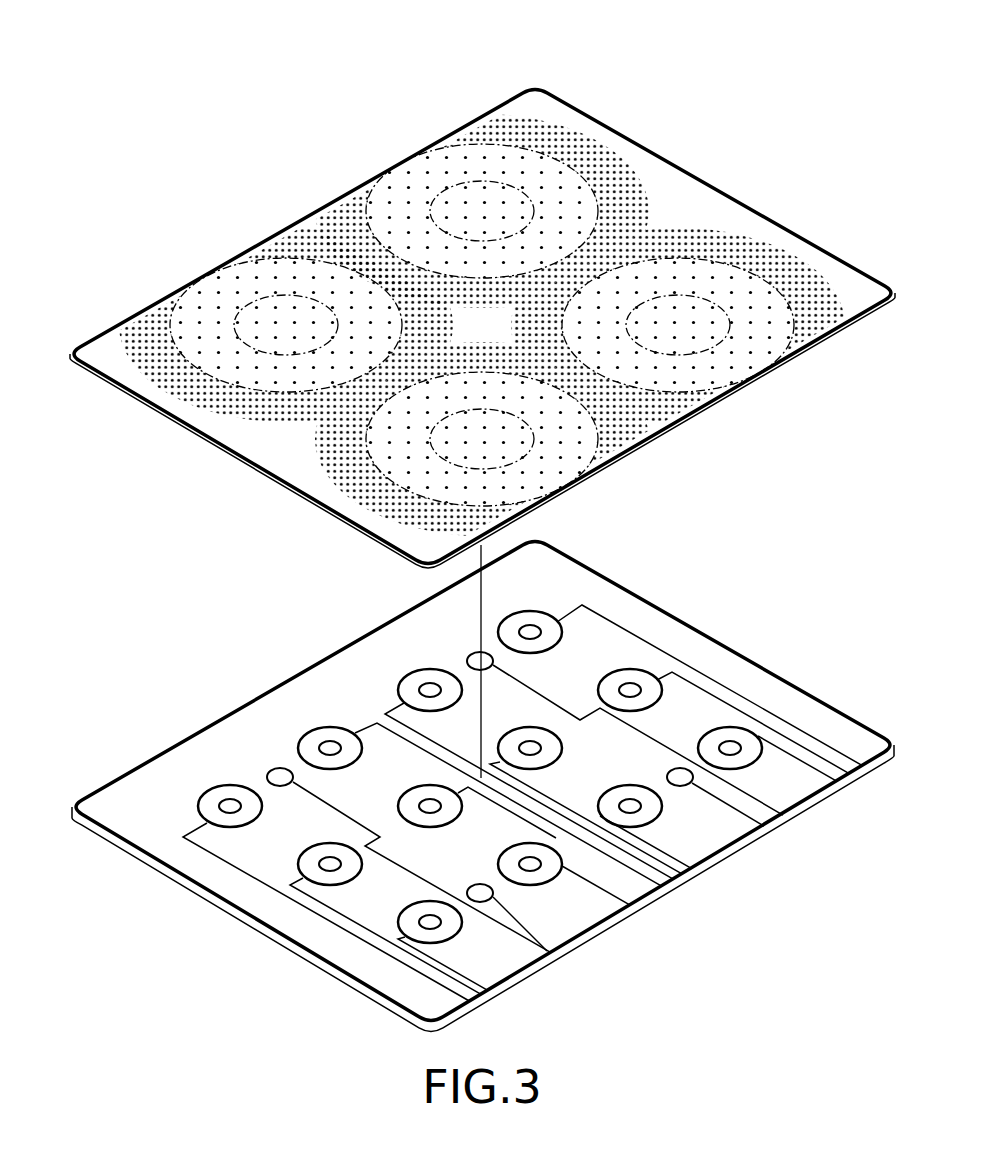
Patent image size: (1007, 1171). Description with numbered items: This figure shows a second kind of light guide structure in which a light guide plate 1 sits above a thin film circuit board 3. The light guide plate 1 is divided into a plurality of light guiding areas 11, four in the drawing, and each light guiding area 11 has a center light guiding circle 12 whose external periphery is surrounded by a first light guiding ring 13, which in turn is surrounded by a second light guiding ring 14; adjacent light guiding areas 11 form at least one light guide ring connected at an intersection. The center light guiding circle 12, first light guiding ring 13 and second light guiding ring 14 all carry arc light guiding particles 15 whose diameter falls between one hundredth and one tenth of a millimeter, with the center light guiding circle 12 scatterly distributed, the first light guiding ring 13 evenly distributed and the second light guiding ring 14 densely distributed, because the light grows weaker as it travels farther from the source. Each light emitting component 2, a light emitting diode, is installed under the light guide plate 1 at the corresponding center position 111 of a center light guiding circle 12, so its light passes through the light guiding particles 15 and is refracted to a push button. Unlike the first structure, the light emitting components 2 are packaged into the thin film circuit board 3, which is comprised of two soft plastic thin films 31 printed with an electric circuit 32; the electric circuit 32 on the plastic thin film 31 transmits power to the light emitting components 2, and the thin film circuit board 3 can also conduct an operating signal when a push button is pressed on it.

The light guide plate 1 is at (696, 188).
The light guiding area 11 is at (562, 103).
The center position 111 is at (482, 210).
The center light guiding circle 12 is at (497, 140).
The first light guiding ring 13 is at (373, 197).
The second light guiding ring 14 is at (600, 135).
The light guiding particles 15 is at (412, 173).
The light emitting component 2 is at (682, 768).
The thin film circuit board 3 is at (268, 655).
The plastic thin film 31 is at (785, 695).
The electric circuit 32 is at (665, 653).